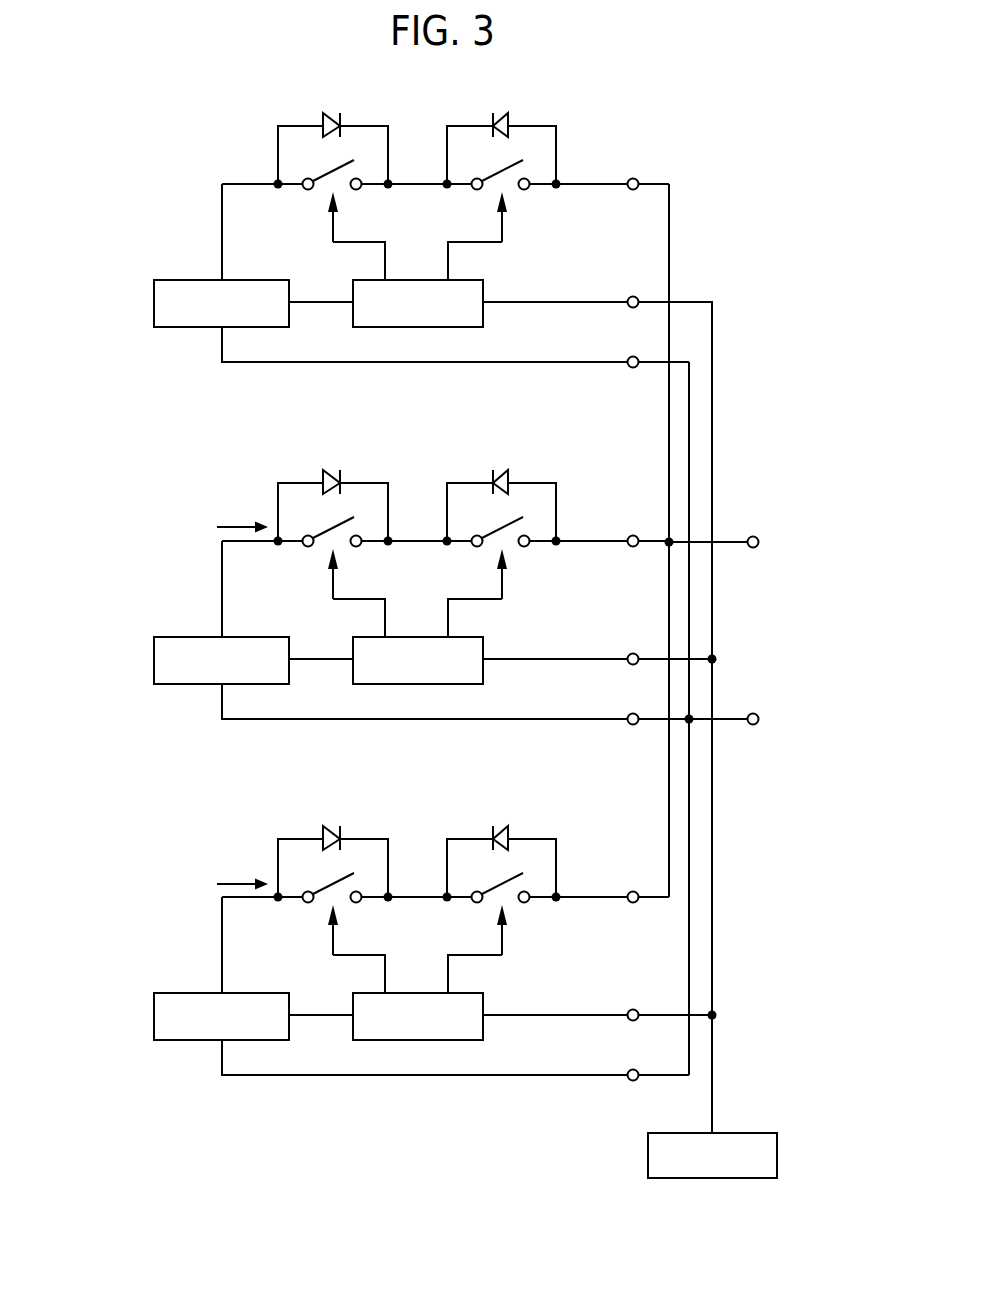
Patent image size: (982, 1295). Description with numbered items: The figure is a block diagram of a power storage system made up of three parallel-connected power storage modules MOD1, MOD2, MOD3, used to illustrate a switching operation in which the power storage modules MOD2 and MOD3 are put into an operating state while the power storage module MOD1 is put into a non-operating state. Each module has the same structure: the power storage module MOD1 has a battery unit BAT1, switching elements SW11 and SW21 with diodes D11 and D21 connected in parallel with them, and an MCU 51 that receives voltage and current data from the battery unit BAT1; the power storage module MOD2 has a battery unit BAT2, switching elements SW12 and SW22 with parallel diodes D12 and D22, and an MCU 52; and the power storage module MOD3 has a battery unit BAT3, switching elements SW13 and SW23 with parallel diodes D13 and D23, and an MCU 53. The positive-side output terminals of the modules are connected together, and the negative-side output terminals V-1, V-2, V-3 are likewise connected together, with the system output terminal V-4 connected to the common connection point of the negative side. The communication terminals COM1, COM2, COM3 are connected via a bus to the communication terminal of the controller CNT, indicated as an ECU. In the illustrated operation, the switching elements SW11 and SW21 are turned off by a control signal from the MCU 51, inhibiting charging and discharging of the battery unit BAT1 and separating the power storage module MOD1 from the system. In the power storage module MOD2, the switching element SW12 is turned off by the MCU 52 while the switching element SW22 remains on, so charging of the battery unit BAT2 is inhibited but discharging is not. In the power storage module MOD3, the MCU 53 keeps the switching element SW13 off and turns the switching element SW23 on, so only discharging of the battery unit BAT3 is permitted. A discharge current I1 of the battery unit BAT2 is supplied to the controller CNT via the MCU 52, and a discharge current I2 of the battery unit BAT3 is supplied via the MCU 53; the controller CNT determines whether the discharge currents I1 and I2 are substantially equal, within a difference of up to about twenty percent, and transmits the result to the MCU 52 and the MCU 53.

The power storage module MOD1 is at (160, 172).
The power storage module MOD2 is at (394, 598).
The power storage module MOD3 is at (394, 953).
The diode D11 is at (353, 99).
The diode D21 is at (503, 113).
The diode D12 is at (333, 486).
The diode D22 is at (501, 486).
The diode D13 is at (333, 842).
The diode D23 is at (501, 842).
The switching element SW11 is at (342, 196).
The switching element SW21 is at (511, 196).
The switching element SW12 is at (350, 550).
The switching element SW22 is at (514, 550).
The switching element SW13 is at (350, 906).
The switching element SW23 is at (514, 906).
The battery unit BAT1 is at (283, 261).
The battery unit BAT2 is at (253, 639).
The battery unit BAT3 is at (253, 995).
The MCU 51 is at (484, 280).
The MCU 52 is at (423, 616).
The MCU 53 is at (423, 972).
The communication terminal COM1 is at (633, 296).
The negative-side output terminal V-1 is at (633, 356).
The communication terminal COM2 is at (597, 632).
The negative-side output terminal V-2 is at (631, 699).
The communication terminal COM3 is at (597, 987).
The negative-side output terminal V-3 is at (631, 1054).
The output terminal V-4 is at (753, 713).
The controller CNT is at (743, 1133).
The discharge current I1 is at (242, 516).
The discharge current I2 is at (242, 874).